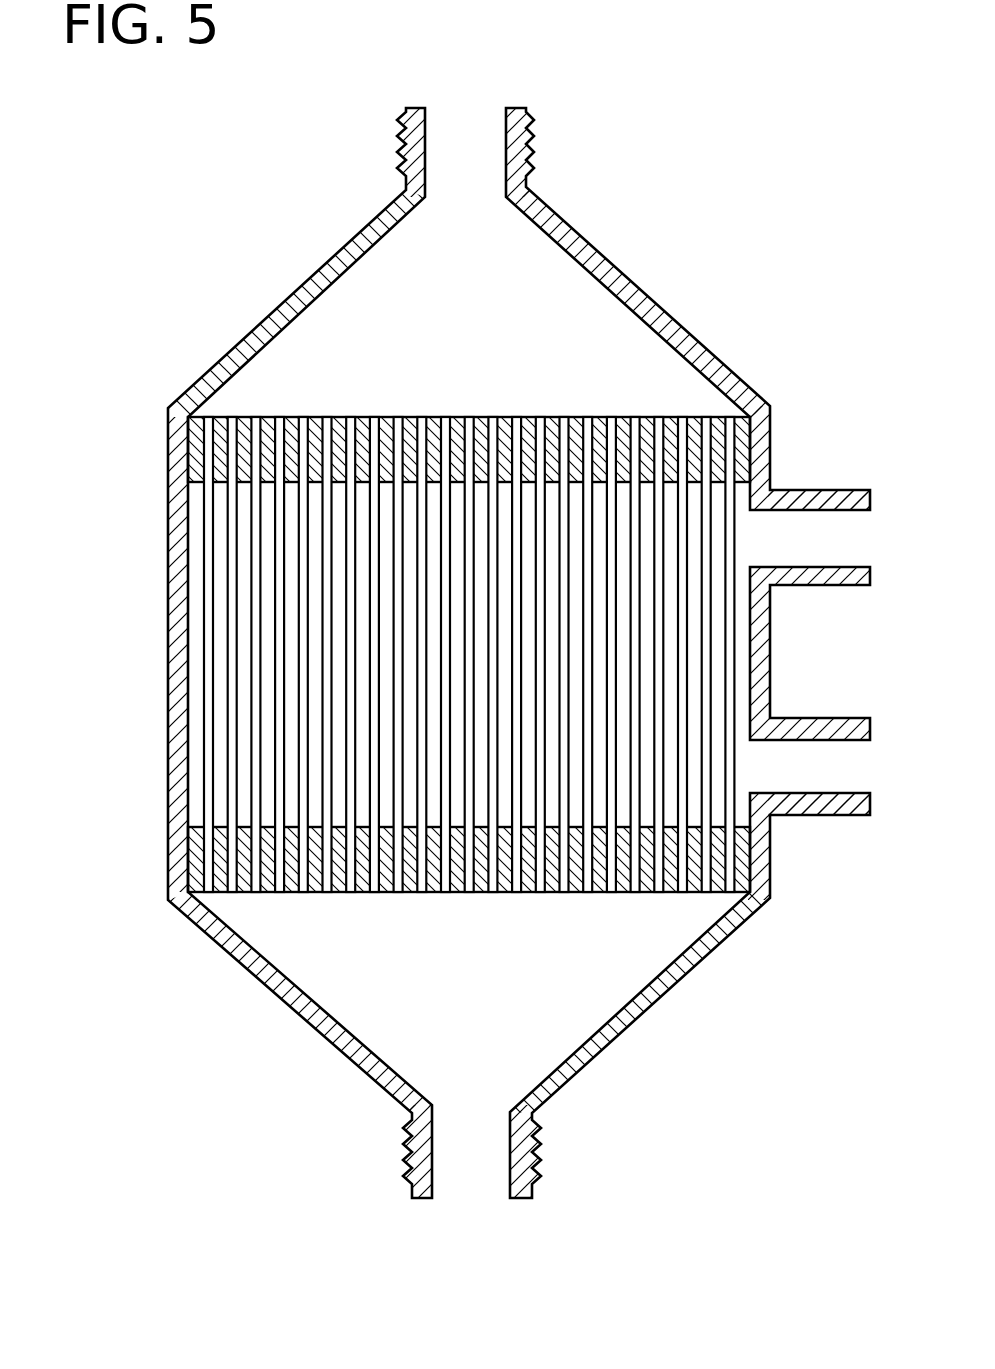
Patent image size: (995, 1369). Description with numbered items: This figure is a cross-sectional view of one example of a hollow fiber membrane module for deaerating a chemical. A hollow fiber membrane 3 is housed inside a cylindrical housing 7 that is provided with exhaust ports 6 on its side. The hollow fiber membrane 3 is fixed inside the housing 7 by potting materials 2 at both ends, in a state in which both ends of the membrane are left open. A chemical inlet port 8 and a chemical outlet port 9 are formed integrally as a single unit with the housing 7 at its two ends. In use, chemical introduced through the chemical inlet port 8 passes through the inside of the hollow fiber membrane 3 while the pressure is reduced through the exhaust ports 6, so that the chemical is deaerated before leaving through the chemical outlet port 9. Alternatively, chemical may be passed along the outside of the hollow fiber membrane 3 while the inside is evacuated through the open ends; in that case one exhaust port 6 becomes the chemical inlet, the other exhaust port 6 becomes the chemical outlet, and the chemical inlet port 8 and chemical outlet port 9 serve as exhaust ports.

The potting material 2 is at (384, 432).
The hollow fiber membrane 3 is at (255, 648).
The exhaust port 6 is at (832, 500).
The cylindrical housing 7 is at (766, 898).
The chemical inlet port 8 is at (470, 1180).
The chemical outlet port 9 is at (462, 128).